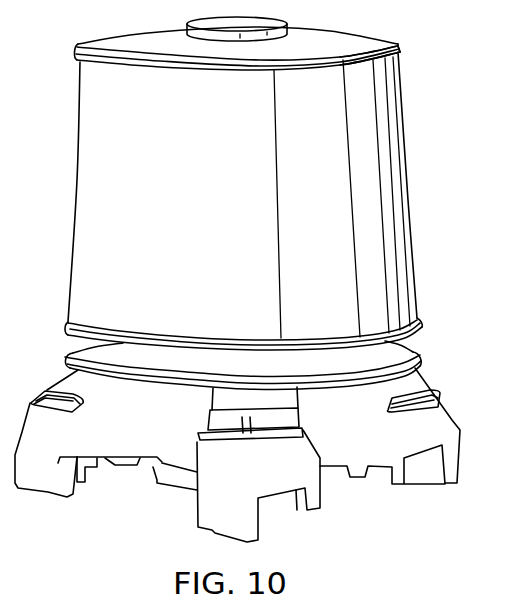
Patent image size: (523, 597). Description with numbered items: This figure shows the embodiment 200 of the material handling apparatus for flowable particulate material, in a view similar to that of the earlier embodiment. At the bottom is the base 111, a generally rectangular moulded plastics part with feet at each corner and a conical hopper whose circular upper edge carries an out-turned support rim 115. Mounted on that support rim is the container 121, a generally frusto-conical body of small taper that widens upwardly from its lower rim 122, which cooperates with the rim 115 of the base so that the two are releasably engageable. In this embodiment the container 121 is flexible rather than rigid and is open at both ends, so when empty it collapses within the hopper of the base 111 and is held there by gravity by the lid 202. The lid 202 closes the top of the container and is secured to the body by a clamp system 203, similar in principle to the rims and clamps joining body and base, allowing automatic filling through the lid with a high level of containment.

The base 111 is at (374, 493).
The out-turned rim 115 is at (418, 362).
The container 121 is at (257, 235).
The lower rim 122 is at (416, 321).
The embodiment 200 is at (272, 175).
The lid 202 is at (333, 33).
The clamp system 203 is at (401, 48).